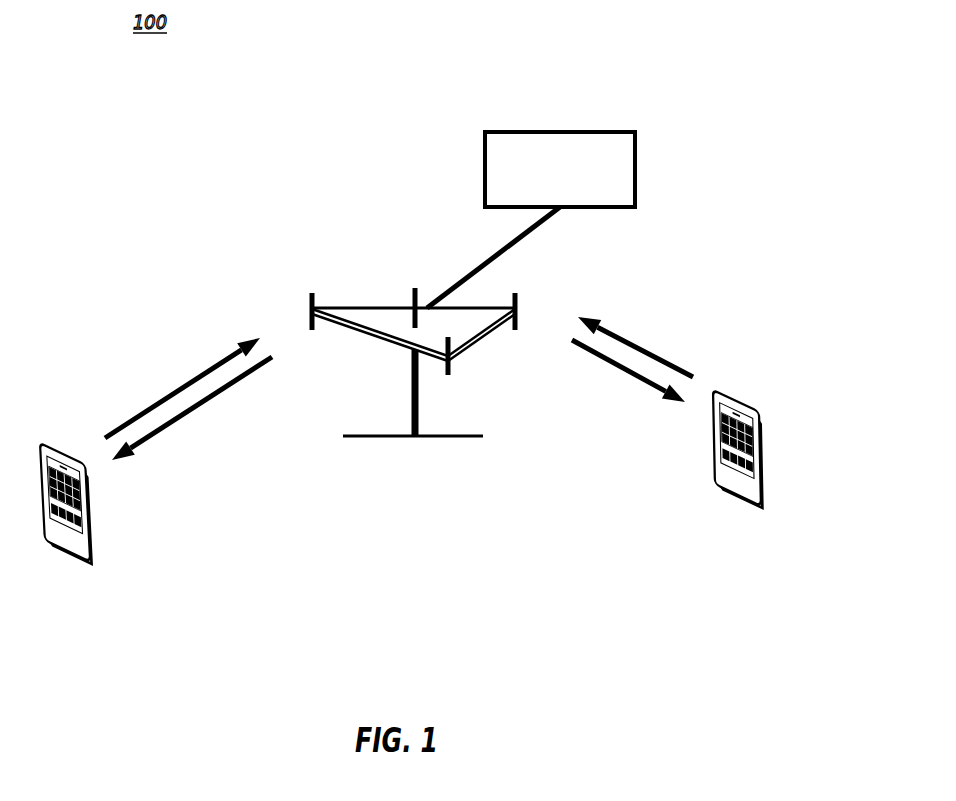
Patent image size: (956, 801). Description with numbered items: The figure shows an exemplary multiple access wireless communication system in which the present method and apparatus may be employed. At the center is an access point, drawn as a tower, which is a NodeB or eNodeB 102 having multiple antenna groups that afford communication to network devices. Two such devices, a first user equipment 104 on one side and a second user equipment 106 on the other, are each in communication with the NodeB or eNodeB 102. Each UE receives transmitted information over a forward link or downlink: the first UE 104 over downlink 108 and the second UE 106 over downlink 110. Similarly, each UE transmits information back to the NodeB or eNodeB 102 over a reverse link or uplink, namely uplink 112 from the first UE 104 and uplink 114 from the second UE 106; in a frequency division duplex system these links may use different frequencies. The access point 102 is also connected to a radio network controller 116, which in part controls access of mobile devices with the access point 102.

The NodeB or eNodeB 102 is at (390, 437).
The user equipment 104 is at (42, 446).
The user equipment 106 is at (722, 388).
The forward link or downlink 108 is at (203, 402).
The forward link or downlink 110 is at (620, 367).
The reverse link or uplink 112 is at (181, 389).
The reverse link or uplink 114 is at (643, 350).
The radio network controller 116 is at (612, 132).